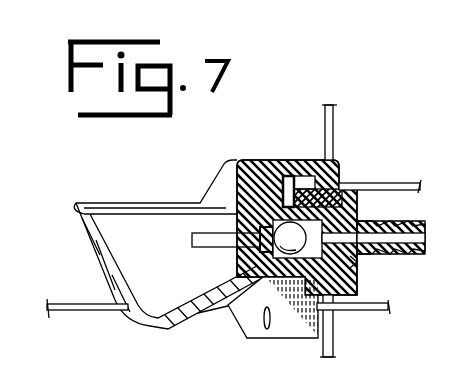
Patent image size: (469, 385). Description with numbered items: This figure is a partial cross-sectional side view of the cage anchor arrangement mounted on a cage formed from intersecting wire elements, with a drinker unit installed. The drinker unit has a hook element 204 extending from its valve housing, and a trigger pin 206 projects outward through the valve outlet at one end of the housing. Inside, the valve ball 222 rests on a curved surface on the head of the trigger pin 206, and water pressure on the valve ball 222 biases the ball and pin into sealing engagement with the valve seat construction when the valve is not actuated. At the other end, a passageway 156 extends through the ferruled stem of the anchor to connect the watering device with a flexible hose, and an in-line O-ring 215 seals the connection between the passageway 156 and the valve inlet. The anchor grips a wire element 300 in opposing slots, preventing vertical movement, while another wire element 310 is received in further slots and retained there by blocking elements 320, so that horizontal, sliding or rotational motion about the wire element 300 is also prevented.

The passageway 156 is at (405, 238).
The hook element 204 is at (290, 176).
The trigger pin 206 is at (203, 248).
The in-line O-ring 215 is at (357, 262).
The valve ball 222 is at (287, 230).
The wire element 300 is at (333, 340).
The wire element 310 is at (382, 316).
The blocking elements 320 is at (258, 325).